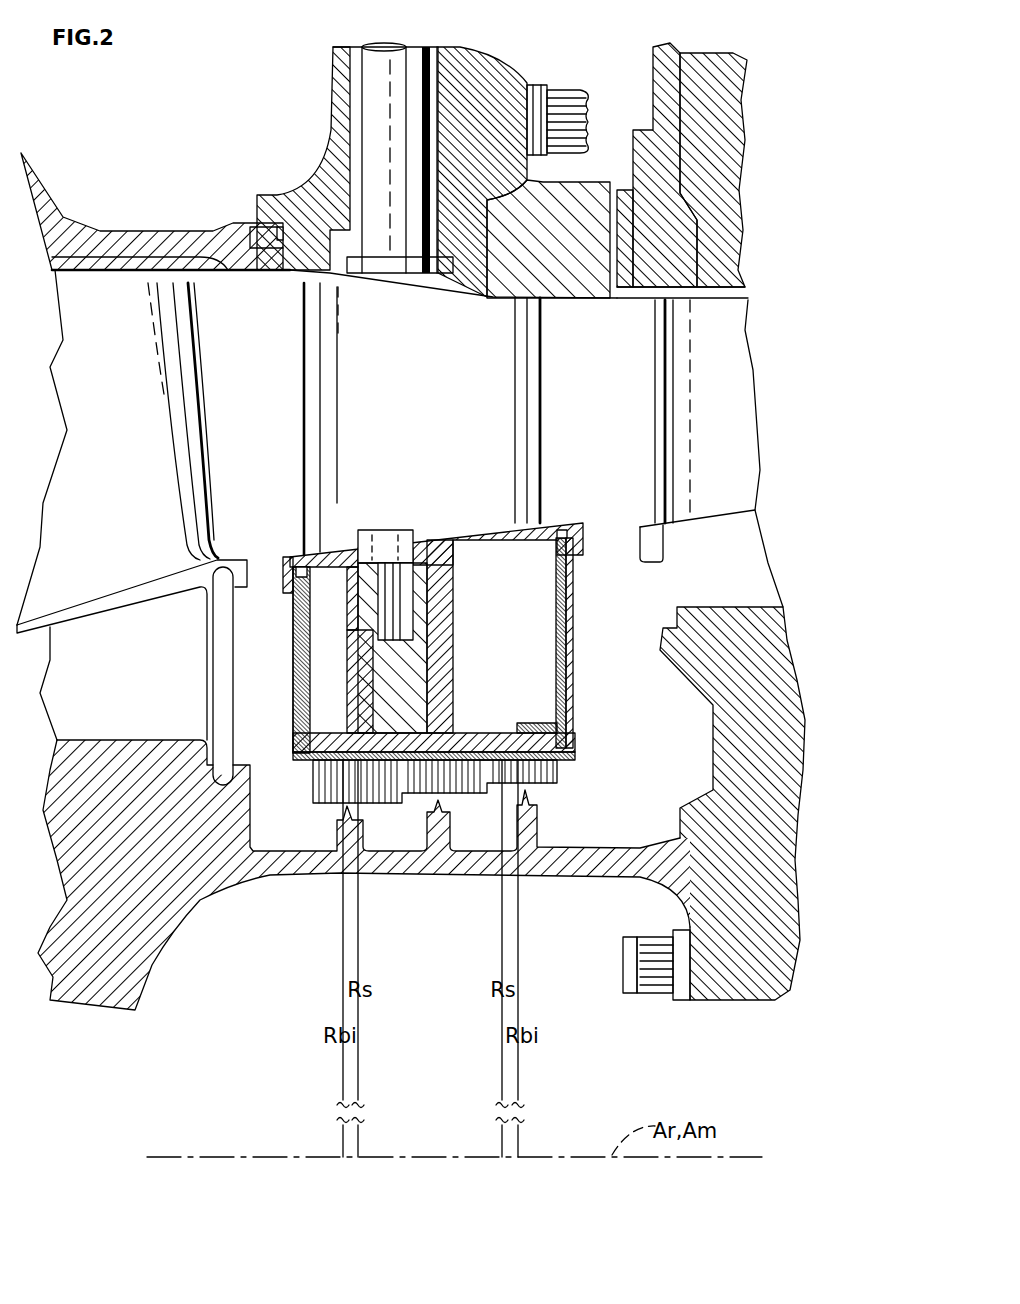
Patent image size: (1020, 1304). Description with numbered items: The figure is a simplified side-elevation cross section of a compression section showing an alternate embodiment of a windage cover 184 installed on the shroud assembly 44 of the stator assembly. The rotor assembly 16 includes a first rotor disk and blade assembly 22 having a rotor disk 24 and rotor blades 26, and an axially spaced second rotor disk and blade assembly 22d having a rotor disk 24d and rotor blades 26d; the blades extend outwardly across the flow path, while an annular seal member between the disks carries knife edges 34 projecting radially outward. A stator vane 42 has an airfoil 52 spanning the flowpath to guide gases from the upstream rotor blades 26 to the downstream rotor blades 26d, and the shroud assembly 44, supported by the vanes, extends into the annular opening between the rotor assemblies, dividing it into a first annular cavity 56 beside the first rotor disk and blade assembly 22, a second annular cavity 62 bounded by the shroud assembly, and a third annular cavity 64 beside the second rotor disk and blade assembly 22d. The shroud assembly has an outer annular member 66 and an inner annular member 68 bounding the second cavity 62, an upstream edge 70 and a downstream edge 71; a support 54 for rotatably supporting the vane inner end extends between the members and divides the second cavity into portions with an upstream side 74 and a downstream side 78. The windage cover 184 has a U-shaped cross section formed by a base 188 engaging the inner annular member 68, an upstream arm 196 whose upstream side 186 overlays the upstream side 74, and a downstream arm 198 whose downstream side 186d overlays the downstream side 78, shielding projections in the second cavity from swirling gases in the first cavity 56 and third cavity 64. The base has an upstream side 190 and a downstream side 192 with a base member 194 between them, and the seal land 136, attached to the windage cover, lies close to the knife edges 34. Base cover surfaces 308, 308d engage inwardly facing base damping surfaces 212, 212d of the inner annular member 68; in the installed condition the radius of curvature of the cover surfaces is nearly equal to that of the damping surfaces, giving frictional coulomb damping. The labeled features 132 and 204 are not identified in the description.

The rotor assembly 16 is at (184, 927).
The first rotor disk and blade assembly 22 is at (46, 762).
The second rotor disk and blade assembly 22d is at (786, 619).
The rotor disk 24 is at (123, 838).
The rotor disk 24d is at (781, 726).
The rotor blades 26 is at (128, 423).
The rotor blades 26d is at (707, 418).
The knife edges 34 is at (446, 813).
The stator vane 42 is at (300, 417).
The shroud assembly 44 is at (587, 519).
The airfoil 52 is at (444, 423).
The support 54 is at (453, 603).
The first annular cavity 56 is at (247, 693).
The second annular cavity 62 is at (315, 641).
The third annular cavity 64 is at (656, 718).
The outer annular member 66 is at (336, 550).
The inner annular member 68 is at (478, 742).
The upstream edge 70 is at (300, 572).
The downstream edge 71 is at (584, 536).
The upstream side 74 is at (346, 694).
The downstream side 78 is at (556, 607).
The rotor seal land 132 is at (430, 875).
The seal land 136 is at (541, 793).
The windage cover 184 is at (294, 661).
The upstream side 186 is at (298, 605).
The downstream side 186d is at (556, 660).
The base 188 is at (566, 761).
The upstream side 190 is at (293, 752).
The downstream side 192 is at (575, 753).
The base member 194 is at (313, 770).
The upstream arm 196 is at (297, 661).
The downstream arm 198 is at (573, 655).
The aft retaining ring 204 is at (572, 541).
The upstream base damping surface 212 is at (352, 810).
The downstream base damping surface 212d is at (485, 762).
The upstream base cover surface 308 is at (375, 700).
The downstream base cover surface 308d is at (541, 724).